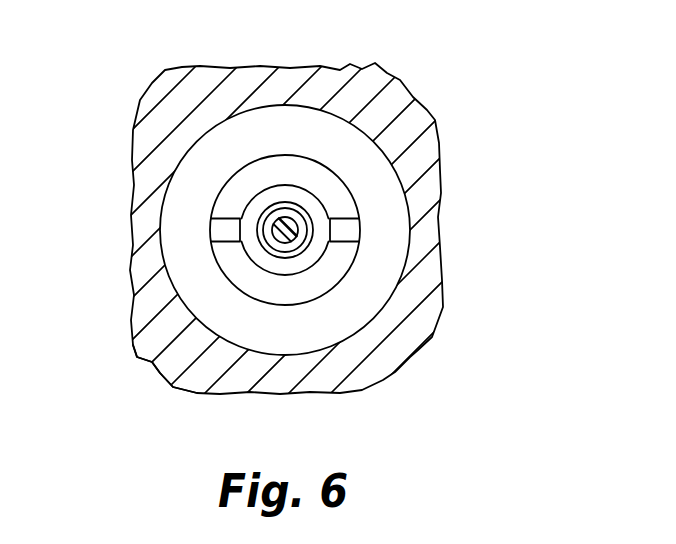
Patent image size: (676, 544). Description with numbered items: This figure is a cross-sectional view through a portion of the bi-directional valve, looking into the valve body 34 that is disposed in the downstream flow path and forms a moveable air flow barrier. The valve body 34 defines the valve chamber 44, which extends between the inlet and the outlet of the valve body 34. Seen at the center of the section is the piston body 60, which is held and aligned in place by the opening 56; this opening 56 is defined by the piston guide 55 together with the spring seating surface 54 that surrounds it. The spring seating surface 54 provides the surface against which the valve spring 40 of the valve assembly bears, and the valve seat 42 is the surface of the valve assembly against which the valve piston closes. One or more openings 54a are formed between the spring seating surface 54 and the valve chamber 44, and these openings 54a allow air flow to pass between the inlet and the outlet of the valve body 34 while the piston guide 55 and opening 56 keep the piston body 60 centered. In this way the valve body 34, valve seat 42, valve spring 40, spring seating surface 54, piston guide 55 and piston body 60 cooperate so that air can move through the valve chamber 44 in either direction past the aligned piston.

The valve body 34 is at (397, 97).
The valve spring 40 is at (307, 212).
The valve seat 42 is at (388, 265).
The valve chamber 44 is at (180, 261).
The spring seating surface 54 is at (222, 228).
The openings 54a is at (286, 166).
The piston guide 55 is at (288, 237).
The opening 56 is at (168, 368).
The piston body 60 is at (278, 222).